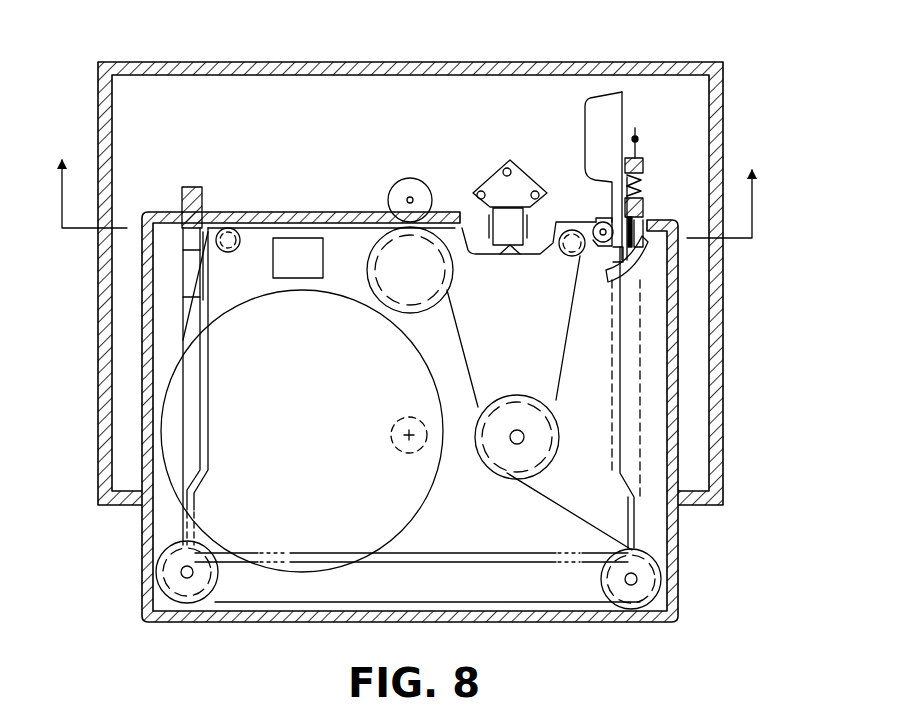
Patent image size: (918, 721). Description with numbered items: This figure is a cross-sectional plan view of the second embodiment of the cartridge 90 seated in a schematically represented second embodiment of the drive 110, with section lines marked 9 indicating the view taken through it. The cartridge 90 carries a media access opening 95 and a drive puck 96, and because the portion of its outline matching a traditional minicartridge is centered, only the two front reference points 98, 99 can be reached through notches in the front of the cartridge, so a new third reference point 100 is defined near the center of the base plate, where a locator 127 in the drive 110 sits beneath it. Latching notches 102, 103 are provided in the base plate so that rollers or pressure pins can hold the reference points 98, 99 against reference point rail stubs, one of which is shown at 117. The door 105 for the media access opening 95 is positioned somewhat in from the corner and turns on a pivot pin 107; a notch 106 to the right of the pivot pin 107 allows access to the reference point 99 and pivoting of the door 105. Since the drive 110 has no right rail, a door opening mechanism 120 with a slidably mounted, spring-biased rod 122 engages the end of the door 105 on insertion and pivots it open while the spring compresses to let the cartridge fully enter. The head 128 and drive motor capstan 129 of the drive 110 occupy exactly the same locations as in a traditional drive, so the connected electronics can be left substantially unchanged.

The drive 110 is at (205, 62).
The cartridge 90 is at (681, 549).
The section line 9- 9 is at (408, 188).
The reference point 100 is at (406, 432).
The locator 127 is at (392, 447).
The drive motor capstan 129 is at (398, 182).
The drive puck 96 is at (455, 272).
The reference point rail stub 117 is at (195, 187).
The reference point 98 is at (197, 237).
The latching notch 102 is at (203, 255).
The media access opening 95 is at (468, 235).
The head 128 is at (508, 212).
The pivot pin 107 is at (598, 222).
The door 105 is at (592, 118).
The rod 122 is at (636, 130).
The door opening mechanism 120 is at (650, 185).
The notch 106 is at (617, 277).
The reference point 99 is at (633, 238).
The latching notch 103 is at (620, 306).